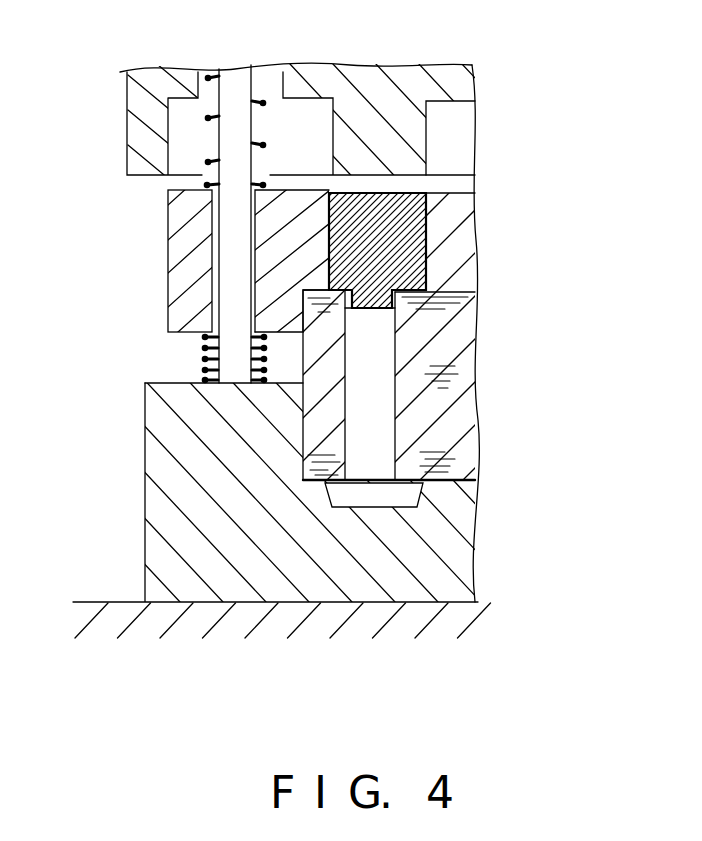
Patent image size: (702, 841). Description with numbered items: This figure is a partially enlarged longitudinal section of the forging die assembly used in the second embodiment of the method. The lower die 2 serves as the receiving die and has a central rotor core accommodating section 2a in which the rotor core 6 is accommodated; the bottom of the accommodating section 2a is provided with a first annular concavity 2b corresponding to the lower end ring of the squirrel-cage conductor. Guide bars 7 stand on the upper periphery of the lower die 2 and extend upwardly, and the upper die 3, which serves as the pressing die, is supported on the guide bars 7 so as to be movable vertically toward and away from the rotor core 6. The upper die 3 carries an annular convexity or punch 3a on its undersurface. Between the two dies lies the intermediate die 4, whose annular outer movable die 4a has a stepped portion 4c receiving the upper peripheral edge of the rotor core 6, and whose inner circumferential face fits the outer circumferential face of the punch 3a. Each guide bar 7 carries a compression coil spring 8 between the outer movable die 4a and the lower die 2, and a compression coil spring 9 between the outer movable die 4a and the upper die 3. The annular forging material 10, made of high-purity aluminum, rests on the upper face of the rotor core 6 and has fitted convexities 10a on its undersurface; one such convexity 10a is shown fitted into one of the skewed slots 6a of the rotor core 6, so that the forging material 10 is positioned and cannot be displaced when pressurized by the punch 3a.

The lower die 2 is at (145, 562).
The rotor core accommodating section 2a is at (300, 435).
The first annular concavity 2b is at (330, 497).
The upper die 3 is at (127, 118).
The annular convexity or punch 3a is at (427, 133).
The intermediate die 4 is at (168, 224).
The outer movable die 4a is at (412, 220).
The stepped portion 4c is at (297, 316).
The rotor core 6 is at (468, 405).
The skewed slots 6a is at (390, 440).
The guide bars 7 is at (235, 70).
The compression coil spring 8 is at (202, 368).
The compression coil spring 9 is at (267, 146).
The forging material 10 is at (418, 271).
The fitted convexities 10a is at (376, 308).